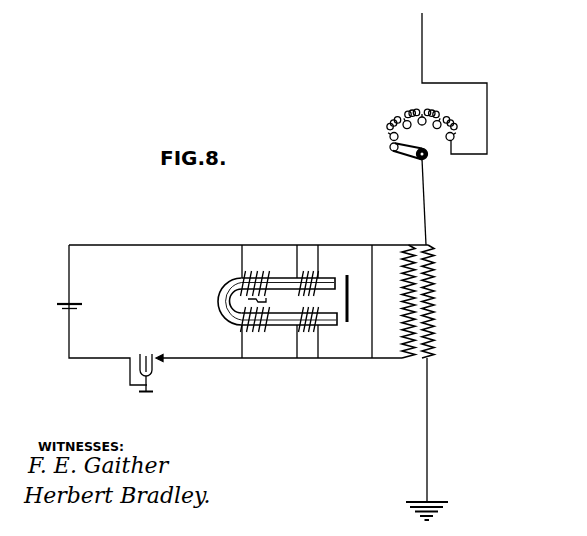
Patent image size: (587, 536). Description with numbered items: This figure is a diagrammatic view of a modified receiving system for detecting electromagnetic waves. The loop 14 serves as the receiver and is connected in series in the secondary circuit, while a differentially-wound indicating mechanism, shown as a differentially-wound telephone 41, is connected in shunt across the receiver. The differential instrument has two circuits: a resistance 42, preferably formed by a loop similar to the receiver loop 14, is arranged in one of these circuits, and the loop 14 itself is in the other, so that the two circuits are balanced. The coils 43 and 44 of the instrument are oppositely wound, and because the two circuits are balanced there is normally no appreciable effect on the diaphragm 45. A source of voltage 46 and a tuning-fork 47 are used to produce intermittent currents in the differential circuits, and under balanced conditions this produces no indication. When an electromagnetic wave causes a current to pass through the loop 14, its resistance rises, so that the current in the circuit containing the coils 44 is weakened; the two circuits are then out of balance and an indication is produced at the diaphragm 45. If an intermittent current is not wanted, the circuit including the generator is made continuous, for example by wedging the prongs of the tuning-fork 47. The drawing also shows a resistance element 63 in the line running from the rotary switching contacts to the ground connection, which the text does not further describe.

The loop 14 is at (370, 302).
The differentially-wound telephone 41 is at (277, 301).
The resistance 42 is at (247, 301).
The coil 43 is at (255, 304).
The coil 44 is at (311, 277).
The diaphragm 45 is at (372, 315).
The source of voltage 46 is at (57, 297).
The tuning-fork 47 is at (147, 355).
The resistance 63 is at (434, 282).